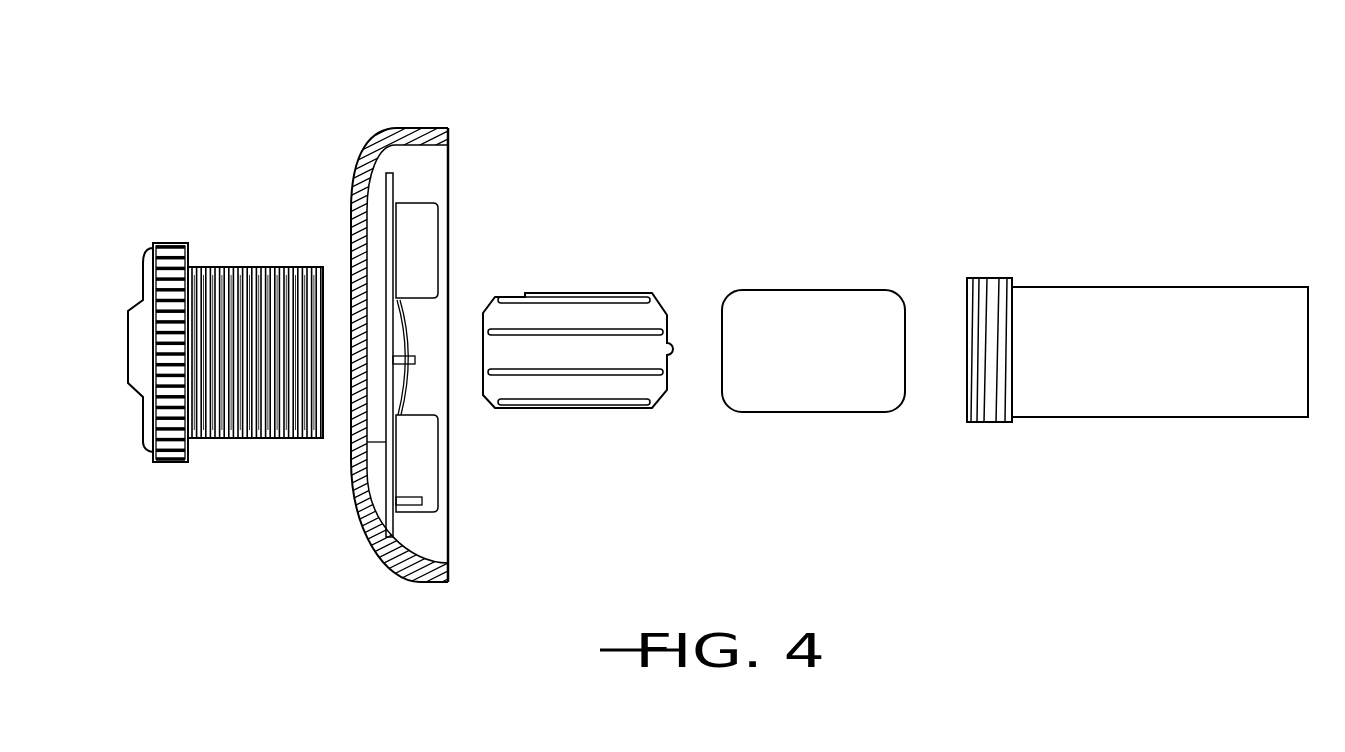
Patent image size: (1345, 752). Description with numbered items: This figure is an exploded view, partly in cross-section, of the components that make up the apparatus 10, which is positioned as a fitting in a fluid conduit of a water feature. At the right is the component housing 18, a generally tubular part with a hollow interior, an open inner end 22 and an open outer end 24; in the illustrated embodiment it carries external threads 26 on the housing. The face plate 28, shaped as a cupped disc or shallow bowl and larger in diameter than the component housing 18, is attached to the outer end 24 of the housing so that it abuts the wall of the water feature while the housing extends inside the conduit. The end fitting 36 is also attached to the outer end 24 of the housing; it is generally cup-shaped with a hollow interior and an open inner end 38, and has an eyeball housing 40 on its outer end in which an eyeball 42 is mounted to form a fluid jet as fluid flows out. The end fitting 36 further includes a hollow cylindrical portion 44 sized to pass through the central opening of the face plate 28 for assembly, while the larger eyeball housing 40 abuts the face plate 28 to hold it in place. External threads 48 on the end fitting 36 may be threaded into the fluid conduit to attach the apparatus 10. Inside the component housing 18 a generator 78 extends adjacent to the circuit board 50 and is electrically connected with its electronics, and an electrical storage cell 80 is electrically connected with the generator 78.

The apparatus 10 is at (930, 122).
The component housing 18 is at (1105, 287).
The inner end 22 is at (1308, 287).
The outer end 24 is at (968, 278).
The external threads 26 is at (990, 278).
The face plate 28 is at (415, 128).
The end fitting 36 is at (222, 267).
The open inner end 38 is at (318, 267).
The eyeball housing 40 is at (170, 242).
The eyeball 42 is at (128, 375).
The hollow cylindrical portion 44 is at (225, 438).
The external threads 48 is at (285, 440).
The circuit board 50 is at (396, 192).
The generator 78 is at (573, 293).
The electrical storage cell 80 is at (830, 290).